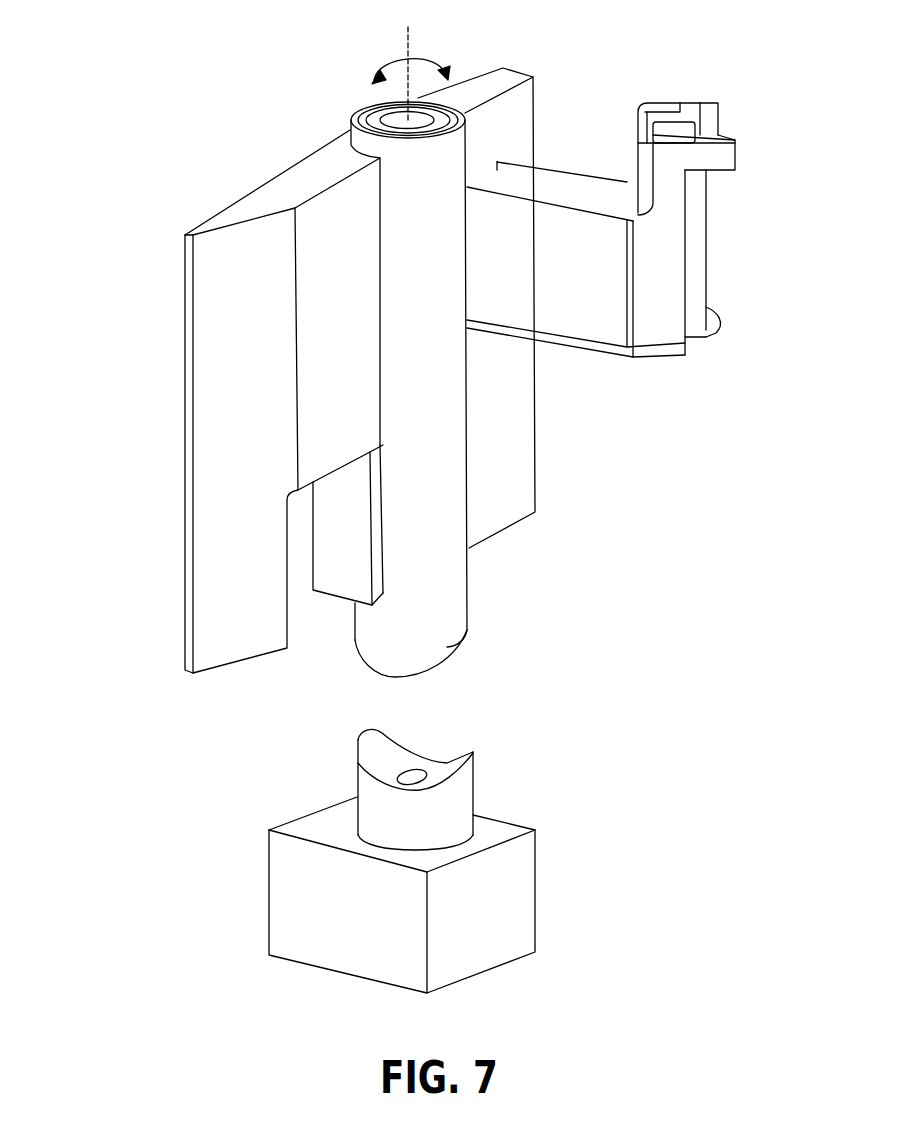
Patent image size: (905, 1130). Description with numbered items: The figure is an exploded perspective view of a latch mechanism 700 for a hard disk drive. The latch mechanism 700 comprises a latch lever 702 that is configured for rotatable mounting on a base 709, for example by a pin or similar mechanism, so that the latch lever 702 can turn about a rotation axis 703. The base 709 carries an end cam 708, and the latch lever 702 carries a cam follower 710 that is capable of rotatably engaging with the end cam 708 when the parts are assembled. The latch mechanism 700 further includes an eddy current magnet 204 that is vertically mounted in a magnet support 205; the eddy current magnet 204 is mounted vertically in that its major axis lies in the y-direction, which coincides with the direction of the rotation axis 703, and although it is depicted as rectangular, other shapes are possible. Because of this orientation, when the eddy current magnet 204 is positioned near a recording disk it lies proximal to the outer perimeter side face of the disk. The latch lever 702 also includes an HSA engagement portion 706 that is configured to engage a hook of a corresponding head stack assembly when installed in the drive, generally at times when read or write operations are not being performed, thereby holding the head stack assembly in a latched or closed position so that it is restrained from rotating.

The latch mechanism 700 is at (165, 75).
The rotation axis 703 is at (410, 42).
The latch lever 702 is at (520, 482).
The HSA engagement portion 706 is at (220, 485).
The cam follower 710 is at (407, 660).
The eddy current magnet 204 is at (692, 245).
The magnet support 205 is at (722, 155).
The end cam 708 is at (457, 792).
The base 709 is at (522, 900).